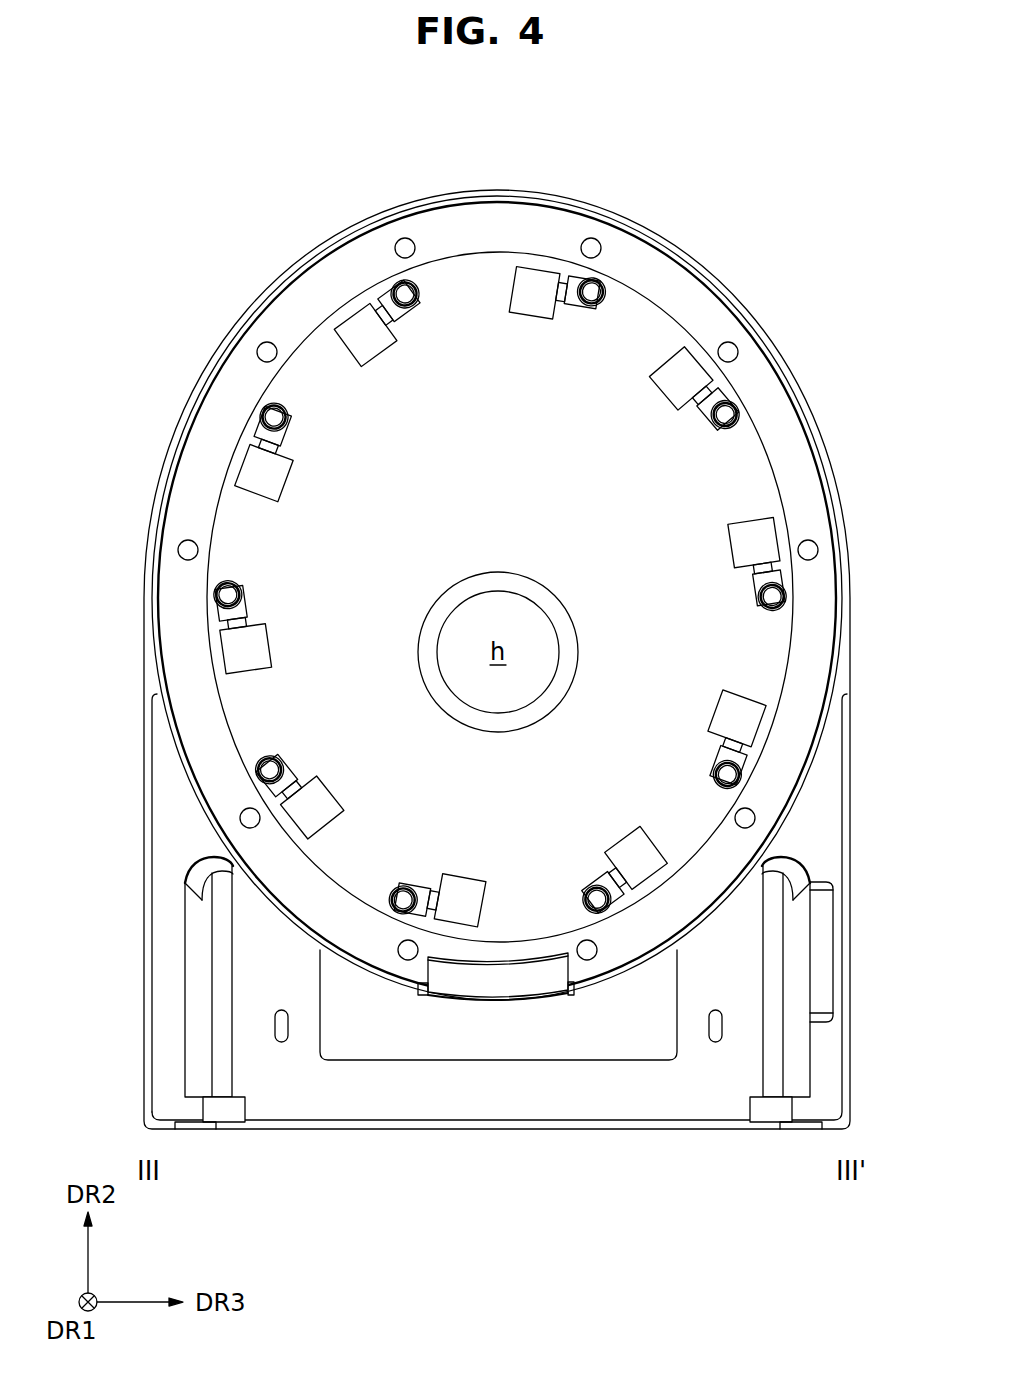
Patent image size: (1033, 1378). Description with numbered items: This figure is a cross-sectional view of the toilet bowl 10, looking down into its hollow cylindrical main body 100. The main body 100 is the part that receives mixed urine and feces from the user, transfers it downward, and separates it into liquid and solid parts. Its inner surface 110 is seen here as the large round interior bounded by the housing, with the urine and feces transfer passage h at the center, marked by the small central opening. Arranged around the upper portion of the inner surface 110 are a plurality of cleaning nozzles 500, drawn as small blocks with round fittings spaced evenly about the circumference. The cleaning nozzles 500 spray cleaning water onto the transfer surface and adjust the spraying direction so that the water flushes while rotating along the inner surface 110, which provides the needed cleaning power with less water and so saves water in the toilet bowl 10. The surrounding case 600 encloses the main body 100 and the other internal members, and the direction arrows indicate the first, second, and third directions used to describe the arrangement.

The toilet bowl 10 is at (854, 154).
The main body 100 is at (752, 378).
The inner surface 110 is at (584, 430).
The cleaning nozzles 500 is at (745, 711).
The case 600 is at (820, 812).